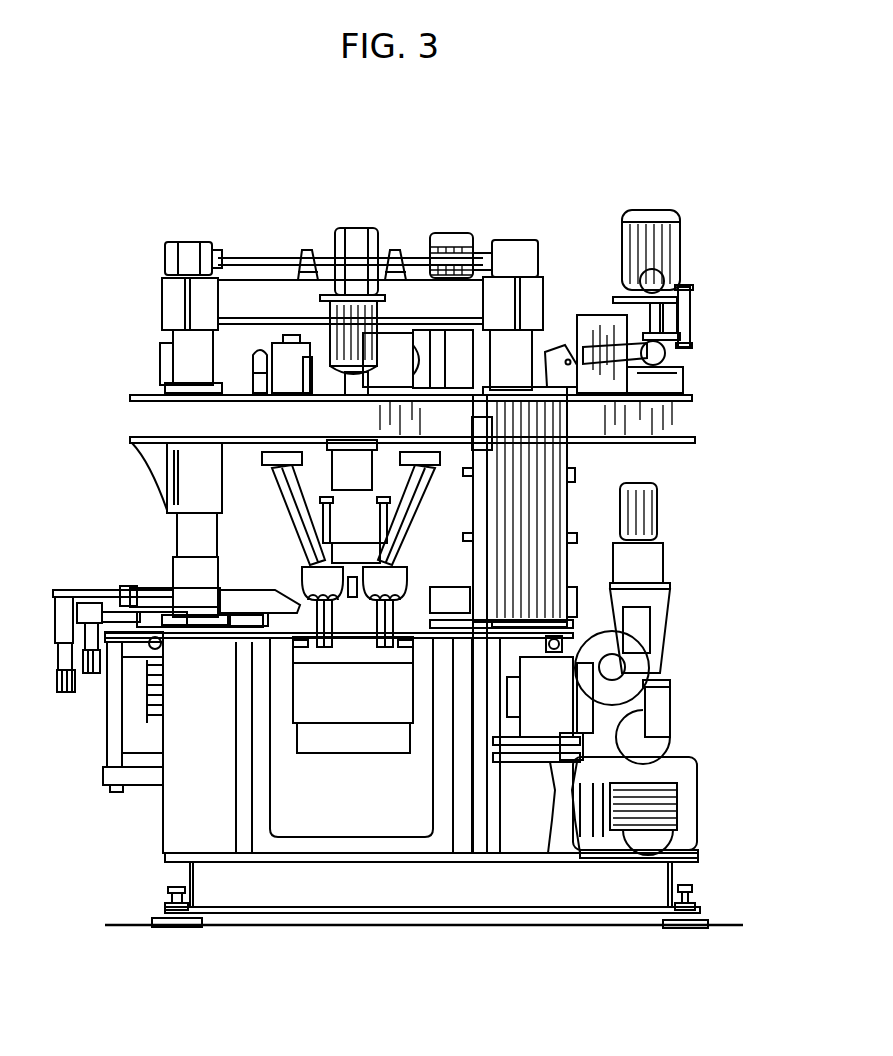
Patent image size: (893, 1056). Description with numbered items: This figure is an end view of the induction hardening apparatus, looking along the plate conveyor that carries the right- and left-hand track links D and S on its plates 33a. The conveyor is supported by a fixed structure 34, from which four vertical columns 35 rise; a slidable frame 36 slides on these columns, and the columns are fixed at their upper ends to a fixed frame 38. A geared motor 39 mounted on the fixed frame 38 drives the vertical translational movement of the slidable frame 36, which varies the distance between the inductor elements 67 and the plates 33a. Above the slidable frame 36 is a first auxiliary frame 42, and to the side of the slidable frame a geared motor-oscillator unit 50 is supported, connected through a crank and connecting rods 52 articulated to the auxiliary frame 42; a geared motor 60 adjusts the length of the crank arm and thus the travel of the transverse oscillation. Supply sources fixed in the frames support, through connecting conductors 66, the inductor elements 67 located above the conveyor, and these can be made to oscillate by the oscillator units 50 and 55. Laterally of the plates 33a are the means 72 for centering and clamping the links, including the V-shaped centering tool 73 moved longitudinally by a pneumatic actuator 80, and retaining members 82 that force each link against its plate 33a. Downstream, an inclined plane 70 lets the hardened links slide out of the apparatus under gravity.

The plates 33a is at (327, 703).
The fixed structure 34 is at (188, 797).
The vertical columns 35 is at (195, 533).
The slidable frame 36 is at (186, 414).
The fixed frame 38 is at (277, 300).
The geared motor 39 is at (357, 320).
The first auxiliary frame 42 is at (238, 360).
The geared motor-oscillator unit 50 is at (696, 268).
The connecting rods 52 is at (608, 350).
The geared motor-oscillator unit 55 is at (443, 405).
The geared motor 60 is at (657, 285).
The connecting conductors 66 is at (292, 486).
The inductor elements 67 is at (302, 588).
The inclined plane 70 is at (322, 633).
The means for centering and clamping 72 is at (50, 655).
The right-hand centering tool 73 is at (292, 620).
The pneumatic actuator 80 is at (157, 687).
The retaining members 82 is at (250, 604).
The right-hand track link D is at (293, 700).
The left-hand track link S is at (368, 635).